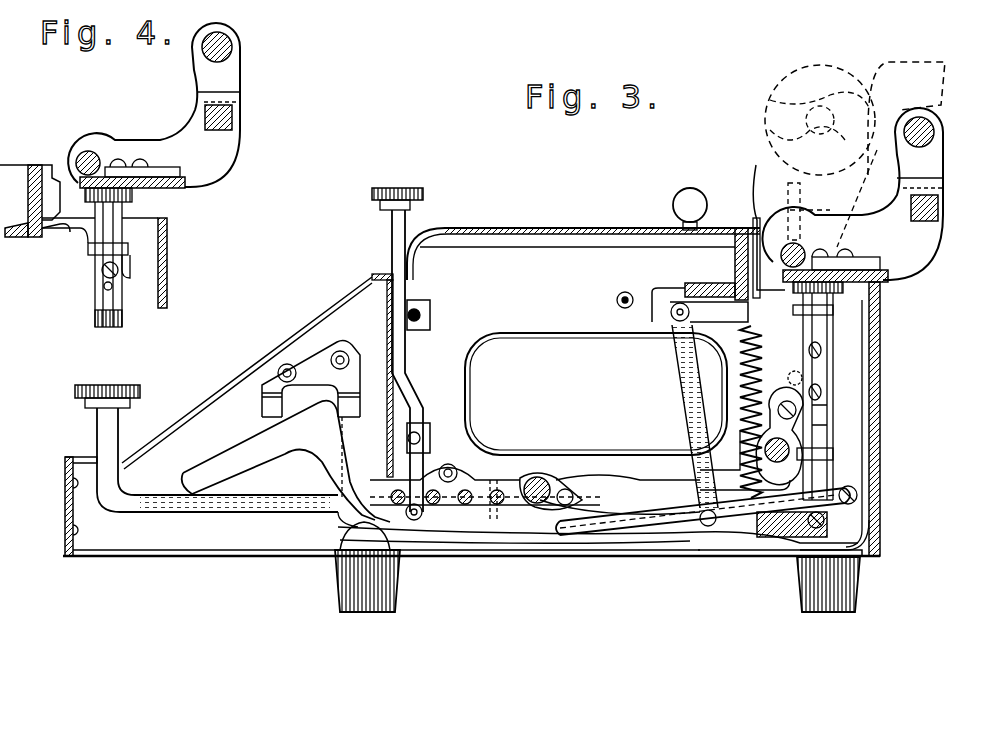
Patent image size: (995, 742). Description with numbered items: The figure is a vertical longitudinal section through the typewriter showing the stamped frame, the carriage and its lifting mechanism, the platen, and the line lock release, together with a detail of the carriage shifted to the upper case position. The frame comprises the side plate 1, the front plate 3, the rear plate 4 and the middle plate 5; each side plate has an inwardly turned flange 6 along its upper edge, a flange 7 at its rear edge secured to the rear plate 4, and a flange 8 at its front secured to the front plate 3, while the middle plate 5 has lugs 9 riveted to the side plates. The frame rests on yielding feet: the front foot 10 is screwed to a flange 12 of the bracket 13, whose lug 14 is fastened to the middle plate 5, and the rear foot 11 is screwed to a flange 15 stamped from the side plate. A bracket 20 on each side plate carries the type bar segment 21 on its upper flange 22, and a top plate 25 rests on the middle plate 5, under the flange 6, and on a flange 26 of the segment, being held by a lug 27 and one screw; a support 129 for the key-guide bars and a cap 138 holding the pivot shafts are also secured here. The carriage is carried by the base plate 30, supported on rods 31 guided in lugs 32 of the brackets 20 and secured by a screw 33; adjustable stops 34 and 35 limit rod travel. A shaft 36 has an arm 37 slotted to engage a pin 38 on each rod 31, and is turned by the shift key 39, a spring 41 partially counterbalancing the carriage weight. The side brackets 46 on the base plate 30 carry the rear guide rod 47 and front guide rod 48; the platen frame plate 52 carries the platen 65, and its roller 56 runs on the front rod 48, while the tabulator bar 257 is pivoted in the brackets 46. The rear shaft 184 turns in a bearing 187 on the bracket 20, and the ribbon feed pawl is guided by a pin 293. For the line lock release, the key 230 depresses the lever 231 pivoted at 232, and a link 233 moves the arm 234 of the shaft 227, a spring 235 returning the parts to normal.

In FIG. 3, the side plate 1 is at (232, 540).
In FIG. 3, the front plate 3 is at (65, 515).
In FIG. 4, the rear plate 4 is at (167, 272).
In FIG. 3, the rear plate 4 is at (872, 545).
In FIG. 3, the middle plate 5 is at (393, 318).
In FIG. 3, the flange 6 is at (625, 230).
In FIG. 3, the flange 7 is at (864, 525).
In FIG. 3, the flange 8 is at (78, 557).
In FIG. 3, the lug 9 is at (430, 318).
In FIG. 3, the front foot 10 is at (385, 592).
In FIG. 3, the rear foot 11 is at (815, 590).
In FIG. 3, the flange 12 is at (345, 540).
In FIG. 3, the bracket 13 is at (340, 524).
In FIG. 3, the lug 14 is at (360, 448).
In FIG. 3, the flange 15 is at (745, 557).
In FIG. 3, the bracket 20 is at (612, 470).
In FIG. 3, the type bar segment 21 is at (745, 215).
In FIG. 3, the upper flange 22 is at (656, 318).
In FIG. 3, the top plate 25 is at (530, 228).
In FIG. 3, the flange 26 is at (700, 250).
In FIG. 3, the lug 27 is at (720, 290).
In FIG. 4, the base plate 30 is at (185, 188).
In FIG. 3, the base plate 30 is at (885, 282).
In FIG. 4, the rod 31 is at (95, 318).
In FIG. 3, the rod 31 is at (833, 478).
In FIG. 4, the lug 32 is at (92, 252).
In FIG. 3, the lug 32 is at (833, 310).
In FIG. 3, the screw 33 is at (845, 257).
In FIG. 4, the adjustable stop 34 is at (95, 292).
In FIG. 3, the adjustable stop 34 is at (833, 352).
In FIG. 3, the adjustable stop 35 is at (827, 412).
In FIG. 3, the shaft 36 is at (535, 478).
In FIG. 3, the arm 37 is at (628, 505).
In FIG. 3, the pin 38 is at (824, 520).
In FIG. 3, the shift key 39 is at (100, 430).
In FIG. 3, the spring 41 is at (740, 390).
In FIG. 4, the side bracket 46 is at (230, 160).
In FIG. 3, the side bracket 46 is at (925, 250).
In FIG. 4, the rear guide rod 47 is at (232, 45).
In FIG. 3, the rear guide rod 47 is at (905, 125).
In FIG. 4, the front guide rod 48 is at (78, 153).
In FIG. 3, the front guide rod 48 is at (800, 245).
In FIG. 3, the plate 52 is at (900, 62).
In FIG. 3, the roller 56 is at (811, 210).
In FIG. 3, the platen 65 is at (776, 80).
In FIG. 3, the support 129 is at (300, 372).
In FIG. 3, the cap 138 is at (455, 505).
In FIG. 3, the shaft 184 is at (700, 445).
In FIG. 3, the bearing 187 is at (758, 390).
In FIG. 3, the shaft 227 is at (755, 180).
In FIG. 3, the key 230 is at (392, 198).
In FIG. 3, the lever 231 is at (583, 535).
In FIG. 3, the pivot 232 is at (855, 490).
In FIG. 3, the link 233 is at (680, 372).
In FIG. 3, the arm 234 is at (760, 240).
In FIG. 3, the spring 235 is at (780, 535).
In FIG. 4, the bar 257 is at (233, 115).
In FIG. 3, the bar 257 is at (938, 210).
In FIG. 3, the pin 293 is at (617, 296).